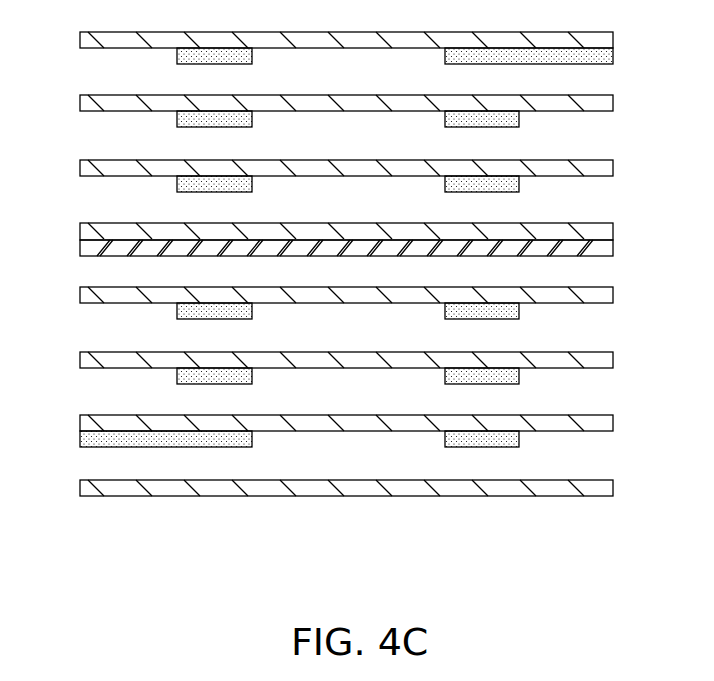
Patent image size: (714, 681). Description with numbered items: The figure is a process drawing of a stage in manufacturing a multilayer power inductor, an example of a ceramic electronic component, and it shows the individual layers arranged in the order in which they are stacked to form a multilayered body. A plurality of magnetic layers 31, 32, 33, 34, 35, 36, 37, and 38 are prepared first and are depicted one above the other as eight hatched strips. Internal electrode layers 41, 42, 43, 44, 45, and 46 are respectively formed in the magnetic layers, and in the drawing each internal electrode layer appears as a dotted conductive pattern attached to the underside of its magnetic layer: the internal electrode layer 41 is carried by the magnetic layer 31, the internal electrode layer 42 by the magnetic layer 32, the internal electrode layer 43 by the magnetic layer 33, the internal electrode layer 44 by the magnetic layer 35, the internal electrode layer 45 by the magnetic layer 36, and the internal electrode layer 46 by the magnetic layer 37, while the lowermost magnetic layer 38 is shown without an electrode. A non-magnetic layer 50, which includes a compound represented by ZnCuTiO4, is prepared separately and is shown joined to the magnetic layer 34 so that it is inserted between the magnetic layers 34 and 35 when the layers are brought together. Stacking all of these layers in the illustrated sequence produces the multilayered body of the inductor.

The magnetic layer 31 is at (611, 40).
The magnetic layer 32 is at (611, 103).
The magnetic layer 33 is at (611, 168).
The magnetic layer 34 is at (611, 231).
The magnetic layer 35 is at (611, 295).
The magnetic layer 36 is at (611, 360).
The magnetic layer 37 is at (611, 423).
The magnetic layer 38 is at (611, 488).
The internal electrode layer 41 is at (177, 55).
The internal electrode layer 42 is at (177, 118).
The internal electrode layer 43 is at (177, 183).
The internal electrode layer 44 is at (177, 310).
The internal electrode layer 45 is at (177, 375).
The internal electrode layer 46 is at (82, 439).
The non-magnetic layer 50 is at (87, 248).